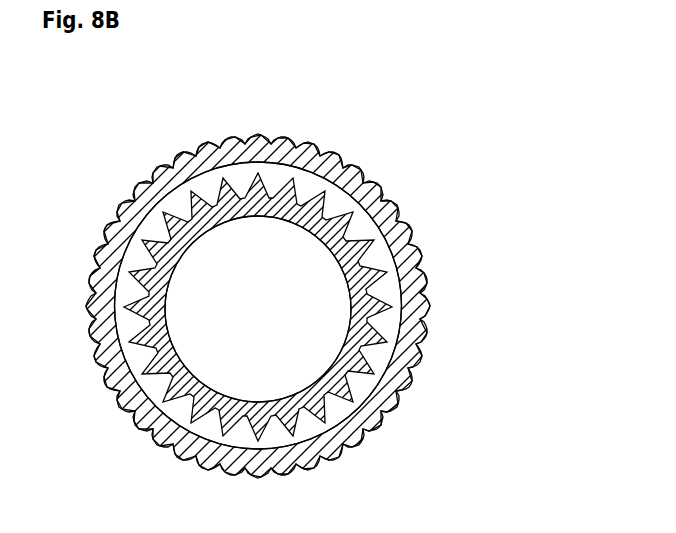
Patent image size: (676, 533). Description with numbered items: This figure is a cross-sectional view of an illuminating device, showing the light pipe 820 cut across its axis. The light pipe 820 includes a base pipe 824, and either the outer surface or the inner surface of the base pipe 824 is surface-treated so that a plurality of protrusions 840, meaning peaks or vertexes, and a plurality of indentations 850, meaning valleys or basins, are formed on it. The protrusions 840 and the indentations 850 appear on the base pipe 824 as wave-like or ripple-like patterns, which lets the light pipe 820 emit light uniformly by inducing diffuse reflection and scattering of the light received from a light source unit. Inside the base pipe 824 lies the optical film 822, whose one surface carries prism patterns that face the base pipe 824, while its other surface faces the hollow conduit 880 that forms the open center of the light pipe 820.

The light pipe 820 is at (335, 305).
The optical film 822 is at (360, 270).
The base pipe 824 is at (410, 240).
The protrusions 840 is at (315, 147).
The indentations 850 is at (332, 150).
The hollow conduit 880 is at (215, 264).